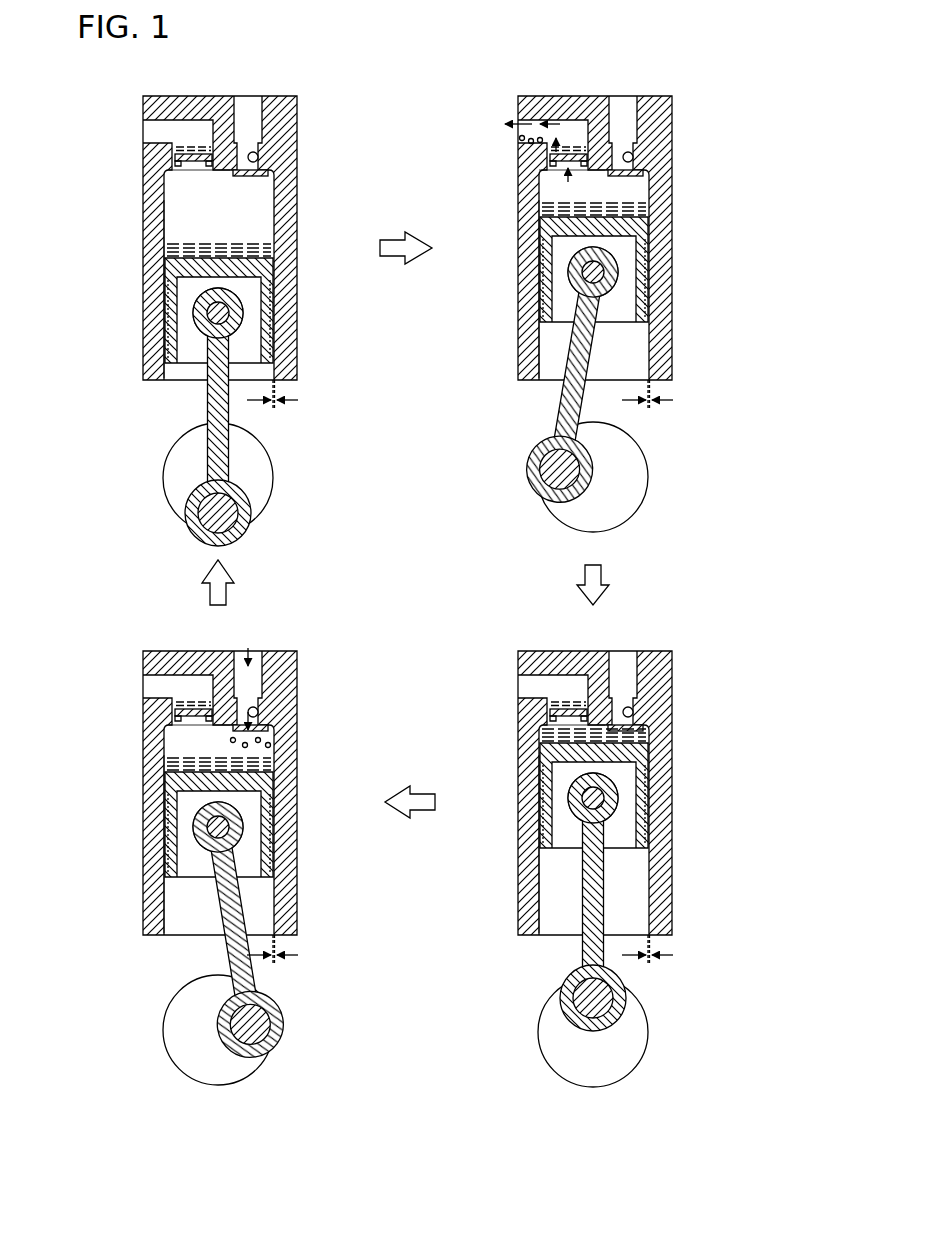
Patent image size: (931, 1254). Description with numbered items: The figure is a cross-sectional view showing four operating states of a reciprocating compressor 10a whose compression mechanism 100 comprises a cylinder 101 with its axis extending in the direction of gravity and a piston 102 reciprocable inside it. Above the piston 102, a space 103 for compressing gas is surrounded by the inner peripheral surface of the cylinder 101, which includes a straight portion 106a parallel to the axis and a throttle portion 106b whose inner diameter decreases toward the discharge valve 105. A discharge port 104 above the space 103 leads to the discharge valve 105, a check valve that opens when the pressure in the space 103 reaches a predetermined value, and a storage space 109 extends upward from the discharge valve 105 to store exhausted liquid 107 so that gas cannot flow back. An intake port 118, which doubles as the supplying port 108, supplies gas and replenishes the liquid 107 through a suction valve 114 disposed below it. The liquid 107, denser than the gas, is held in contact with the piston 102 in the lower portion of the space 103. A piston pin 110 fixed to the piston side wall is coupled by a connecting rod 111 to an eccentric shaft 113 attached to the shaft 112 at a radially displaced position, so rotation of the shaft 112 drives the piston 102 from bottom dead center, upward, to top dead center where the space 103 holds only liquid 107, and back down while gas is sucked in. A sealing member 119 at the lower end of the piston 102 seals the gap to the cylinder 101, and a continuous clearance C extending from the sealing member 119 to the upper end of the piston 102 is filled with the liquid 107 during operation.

The reciprocating compressor 10a is at (416, 557).
The compression mechanism 100 is at (263, 86).
The cylinder 101 is at (283, 220).
The piston 102 is at (268, 300).
The space 103 is at (240, 190).
The discharge port 104 is at (178, 168).
The discharge valve 105 is at (175, 157).
The straight portion 106a is at (160, 210).
The throttle portion 106b is at (168, 180).
The liquid 107 is at (262, 247).
The supplying port 108 is at (507, 425).
The intake port 118 is at (260, 160).
The storage space 109 is at (182, 150).
The piston pin 110 is at (213, 313).
The connecting rod 111 is at (213, 405).
The shaft 112 is at (262, 474).
The eccentric shaft 113 is at (208, 514).
The suction valve 114 is at (265, 173).
The sealing member 119 is at (272, 360).
The clearance C is at (460, 686).